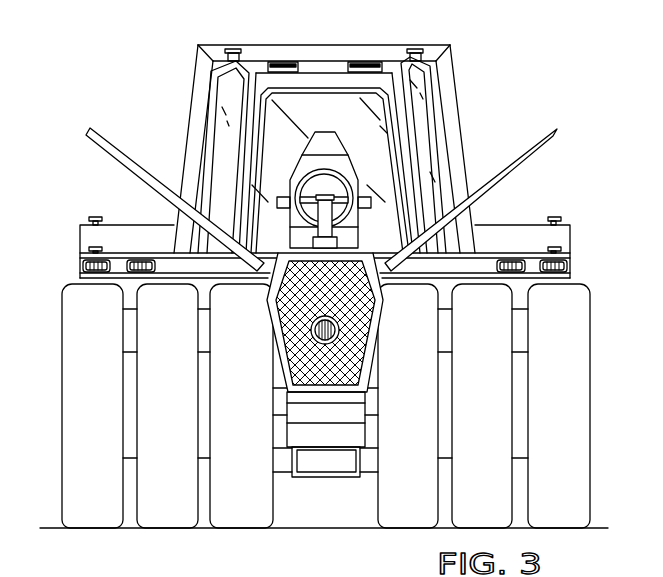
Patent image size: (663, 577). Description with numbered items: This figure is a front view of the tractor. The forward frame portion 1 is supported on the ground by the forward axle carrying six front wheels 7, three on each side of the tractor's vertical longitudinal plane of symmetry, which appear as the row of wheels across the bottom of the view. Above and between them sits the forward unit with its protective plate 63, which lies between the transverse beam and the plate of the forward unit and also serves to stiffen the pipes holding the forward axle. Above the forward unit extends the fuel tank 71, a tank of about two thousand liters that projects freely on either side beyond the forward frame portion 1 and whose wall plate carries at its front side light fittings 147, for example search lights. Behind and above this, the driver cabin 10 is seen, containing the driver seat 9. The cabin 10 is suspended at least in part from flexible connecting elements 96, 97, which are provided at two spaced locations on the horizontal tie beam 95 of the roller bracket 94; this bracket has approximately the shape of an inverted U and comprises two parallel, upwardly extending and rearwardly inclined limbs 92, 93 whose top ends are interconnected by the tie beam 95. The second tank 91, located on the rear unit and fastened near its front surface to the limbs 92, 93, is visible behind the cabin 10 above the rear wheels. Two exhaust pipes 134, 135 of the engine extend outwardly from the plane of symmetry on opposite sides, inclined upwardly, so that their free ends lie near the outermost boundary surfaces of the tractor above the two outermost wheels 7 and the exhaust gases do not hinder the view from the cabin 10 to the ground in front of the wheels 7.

The forward frame portion 1 is at (308, 433).
The front wheels 7 is at (222, 413).
The driver seat 9 is at (317, 138).
The driver cabin 10 is at (321, 131).
The protective plate 63 is at (332, 463).
The fuel tank 71 is at (574, 252).
The second tank 91 is at (573, 229).
The limb 92 is at (463, 147).
The limb 93 is at (190, 127).
The roller bracket 94 is at (322, 22).
The tie beam 95 is at (362, 47).
The flexible connecting element 96 is at (415, 48).
The flexible connecting element 97 is at (232, 48).
The exhaust pipe 134 is at (548, 146).
The exhaust pipe 135 is at (86, 136).
The light fittings 147 is at (83, 264).